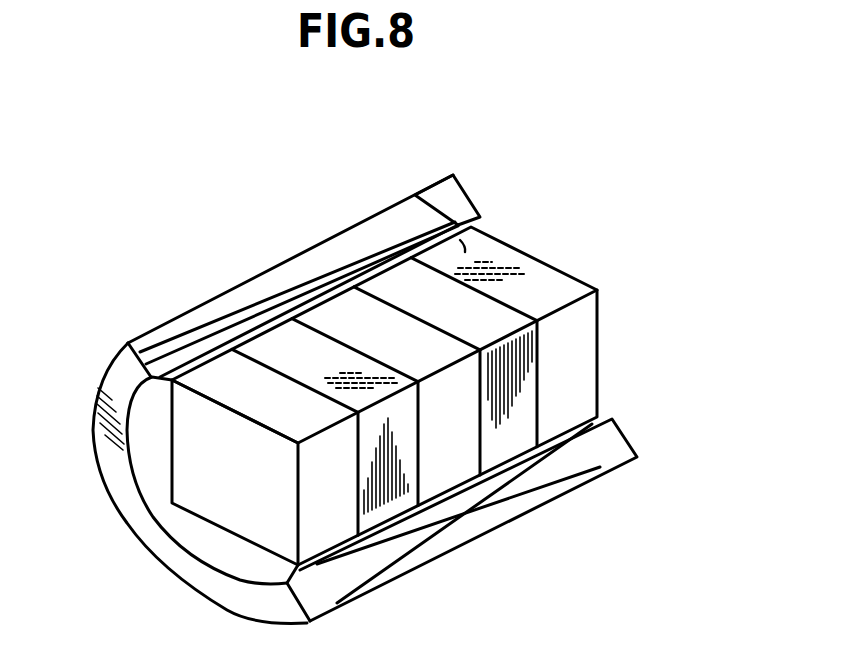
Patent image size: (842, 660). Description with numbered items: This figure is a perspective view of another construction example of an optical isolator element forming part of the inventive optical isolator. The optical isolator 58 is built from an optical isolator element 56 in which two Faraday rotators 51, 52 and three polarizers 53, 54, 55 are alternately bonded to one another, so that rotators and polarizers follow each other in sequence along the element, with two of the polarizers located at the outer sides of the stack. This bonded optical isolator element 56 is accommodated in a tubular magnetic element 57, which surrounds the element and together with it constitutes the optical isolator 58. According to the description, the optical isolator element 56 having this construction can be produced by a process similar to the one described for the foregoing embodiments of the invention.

The Faraday rotator 51 is at (272, 344).
The Faraday rotator 52 is at (398, 283).
The polarizer 53 is at (208, 374).
The polarizer 54 is at (338, 313).
The polarizer 55 is at (415, 205).
The optical isolator element 56 is at (381, 124).
The tubular magnetic element 57 is at (180, 586).
The optical isolator 58 is at (630, 331).